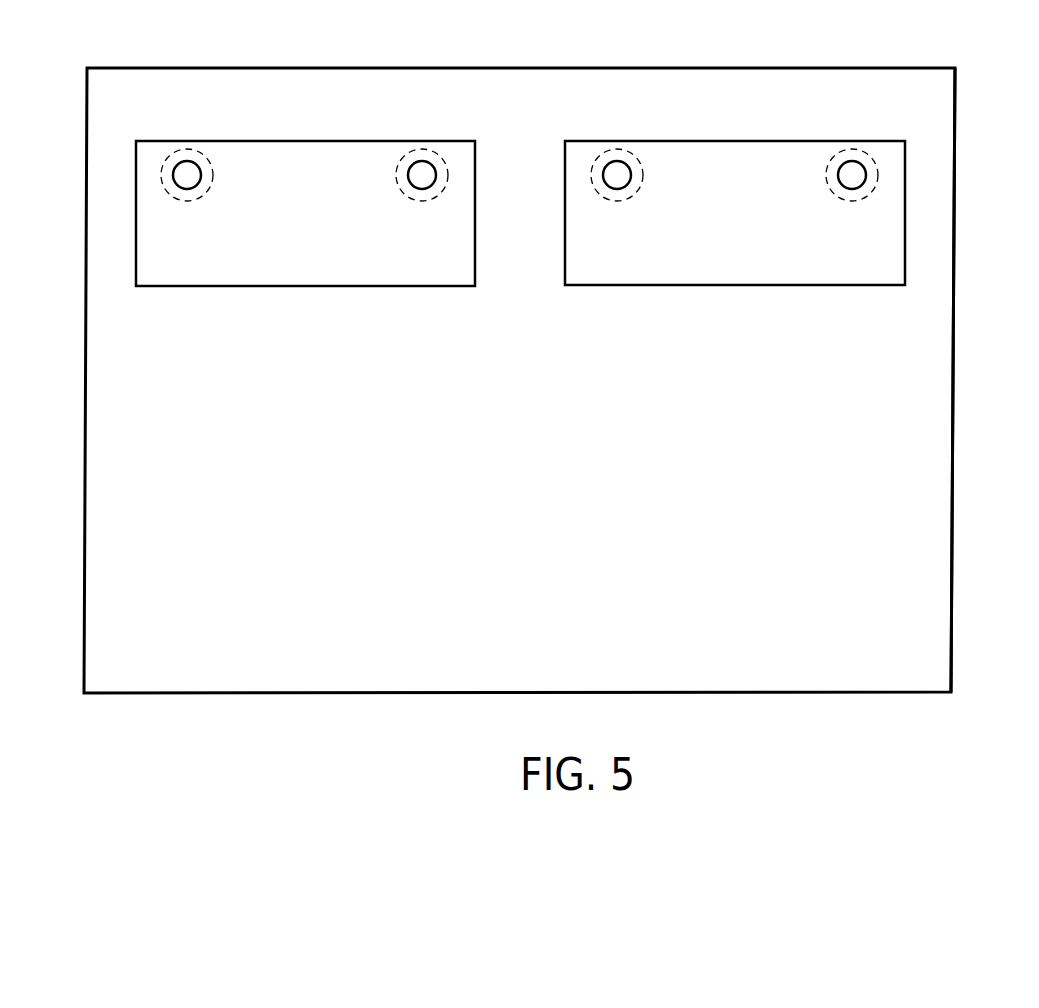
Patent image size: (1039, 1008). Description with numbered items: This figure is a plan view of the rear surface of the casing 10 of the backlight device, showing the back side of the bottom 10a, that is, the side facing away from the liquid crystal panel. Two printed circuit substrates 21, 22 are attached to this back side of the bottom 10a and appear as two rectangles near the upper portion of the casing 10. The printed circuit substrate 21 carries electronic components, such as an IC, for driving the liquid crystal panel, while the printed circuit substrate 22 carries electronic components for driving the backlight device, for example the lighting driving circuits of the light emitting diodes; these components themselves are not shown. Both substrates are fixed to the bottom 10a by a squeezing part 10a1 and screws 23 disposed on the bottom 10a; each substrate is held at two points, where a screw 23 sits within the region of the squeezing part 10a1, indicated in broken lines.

The casing 10 is at (955, 453).
The bottom 10a is at (922, 360).
The squeezing part 10a1 is at (212, 166).
The printed circuit substrate 21 is at (152, 220).
The printed circuit substrate 22 is at (887, 221).
The screws 23 is at (186, 173).